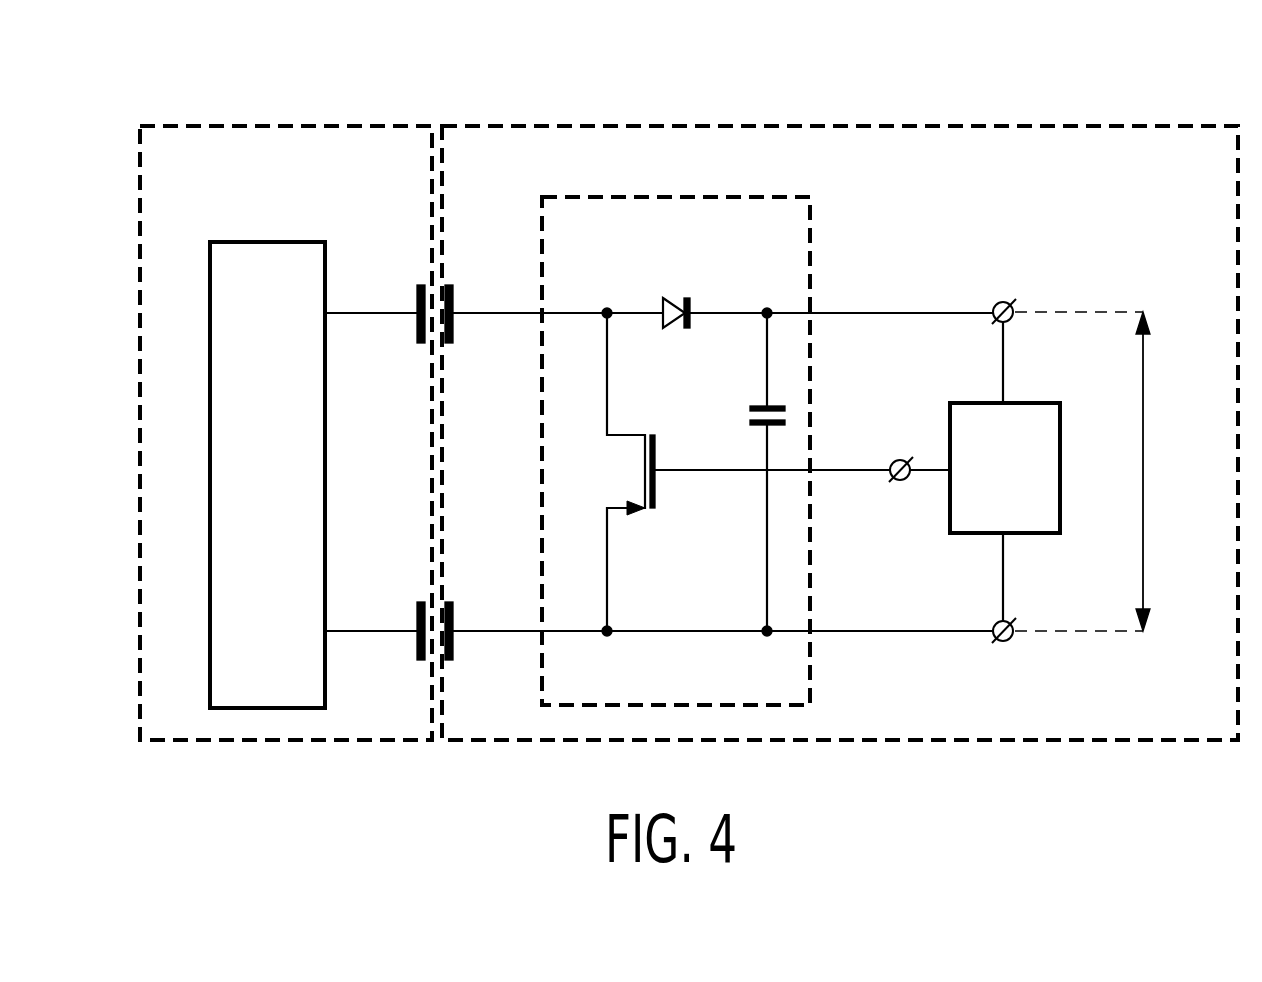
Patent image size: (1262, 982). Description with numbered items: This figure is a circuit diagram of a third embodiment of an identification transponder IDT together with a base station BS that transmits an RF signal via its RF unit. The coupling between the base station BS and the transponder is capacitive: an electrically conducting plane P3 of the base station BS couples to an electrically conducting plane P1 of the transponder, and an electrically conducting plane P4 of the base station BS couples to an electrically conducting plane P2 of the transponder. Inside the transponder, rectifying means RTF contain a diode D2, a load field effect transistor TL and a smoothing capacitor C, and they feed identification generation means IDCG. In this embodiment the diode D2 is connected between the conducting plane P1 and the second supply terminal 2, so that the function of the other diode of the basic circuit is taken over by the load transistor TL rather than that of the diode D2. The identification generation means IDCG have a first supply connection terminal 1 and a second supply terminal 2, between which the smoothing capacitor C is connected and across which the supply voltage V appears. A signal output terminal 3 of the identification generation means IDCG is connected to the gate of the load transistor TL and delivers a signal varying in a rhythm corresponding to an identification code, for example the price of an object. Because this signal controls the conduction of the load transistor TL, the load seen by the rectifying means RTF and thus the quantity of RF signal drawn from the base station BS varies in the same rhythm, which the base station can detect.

The base station BS is at (285, 123).
The identification transponder IDT is at (840, 122).
The rectifying means RTF is at (810, 227).
The RF signal RF is at (267, 475).
The electrically conducting plane P1 is at (455, 300).
The electrically conducting plane P2 is at (458, 620).
The electrically conducting plane P3 is at (415, 300).
The electrically conducting plane P4 is at (416, 620).
The diode D2 is at (680, 300).
The smoothing capacitor C is at (748, 414).
The load field effect transistor TL is at (640, 472).
The first supply connection terminal 1 is at (1007, 648).
The second supply terminal 2 is at (1002, 297).
The signal output terminal 3 is at (900, 458).
The supply voltage V is at (1145, 468).
The identification generation means IDCG is at (1050, 535).